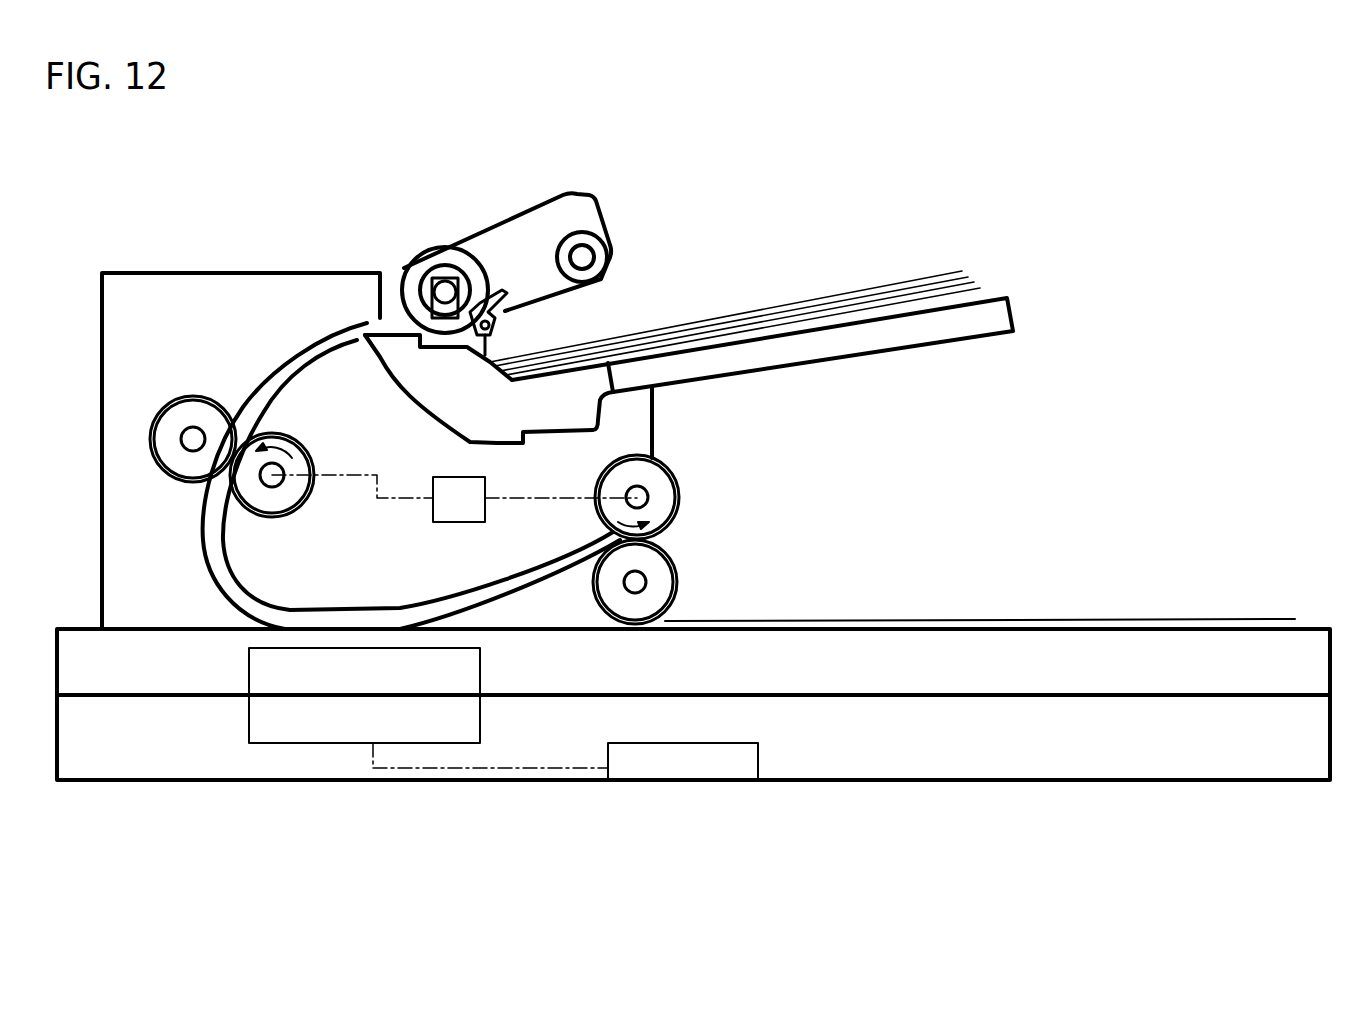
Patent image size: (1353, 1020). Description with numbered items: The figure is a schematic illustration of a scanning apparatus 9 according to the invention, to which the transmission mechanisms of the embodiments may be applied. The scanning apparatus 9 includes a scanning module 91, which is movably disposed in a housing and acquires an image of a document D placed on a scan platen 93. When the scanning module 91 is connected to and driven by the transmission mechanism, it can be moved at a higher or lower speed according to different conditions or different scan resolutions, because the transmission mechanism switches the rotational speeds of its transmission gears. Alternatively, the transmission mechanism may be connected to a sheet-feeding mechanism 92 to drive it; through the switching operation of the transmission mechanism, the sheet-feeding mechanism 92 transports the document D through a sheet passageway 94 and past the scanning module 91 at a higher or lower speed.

The scanning apparatus 9 is at (780, 235).
The document D is at (895, 283).
The scan platen 93 is at (947, 622).
The sheet passageway 94 is at (290, 363).
The sheet-feeding mechanism 92 is at (293, 503).
The scanning module 91 is at (327, 745).